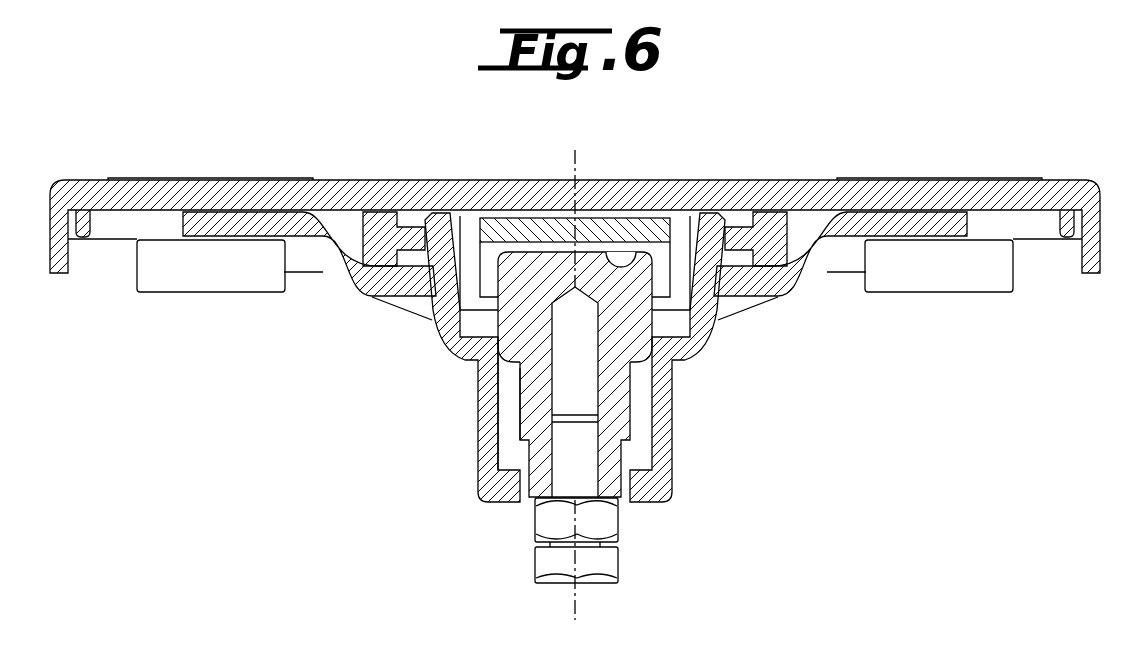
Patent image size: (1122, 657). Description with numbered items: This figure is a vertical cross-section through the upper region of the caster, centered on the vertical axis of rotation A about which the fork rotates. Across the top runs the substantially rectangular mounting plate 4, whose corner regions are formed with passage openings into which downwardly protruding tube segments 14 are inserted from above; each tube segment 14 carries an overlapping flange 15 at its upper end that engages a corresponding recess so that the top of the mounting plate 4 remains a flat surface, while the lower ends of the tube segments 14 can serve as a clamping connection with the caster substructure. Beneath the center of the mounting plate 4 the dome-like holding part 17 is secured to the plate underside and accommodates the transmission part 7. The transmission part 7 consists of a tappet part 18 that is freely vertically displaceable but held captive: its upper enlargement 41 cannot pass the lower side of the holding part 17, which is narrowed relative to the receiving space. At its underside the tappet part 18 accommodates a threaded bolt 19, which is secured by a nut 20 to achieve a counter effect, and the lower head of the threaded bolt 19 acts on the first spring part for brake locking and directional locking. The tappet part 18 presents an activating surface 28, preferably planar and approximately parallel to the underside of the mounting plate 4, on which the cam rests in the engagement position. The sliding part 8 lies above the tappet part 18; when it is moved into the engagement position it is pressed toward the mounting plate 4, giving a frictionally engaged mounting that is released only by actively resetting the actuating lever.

The mounting plate 4 is at (353, 195).
The overlapping flange 15 is at (222, 178).
The tube segment 14 is at (162, 287).
The holding part 17 is at (489, 385).
The transmission part 7 is at (507, 413).
The sliding part 8 is at (592, 228).
The upper enlargement 41 is at (515, 275).
The tappet part 18 is at (617, 352).
The activating surface 28 is at (640, 245).
The nut 20 is at (552, 520).
The threaded bolt 19 is at (548, 565).
The vertical axis of rotation A is at (574, 150).